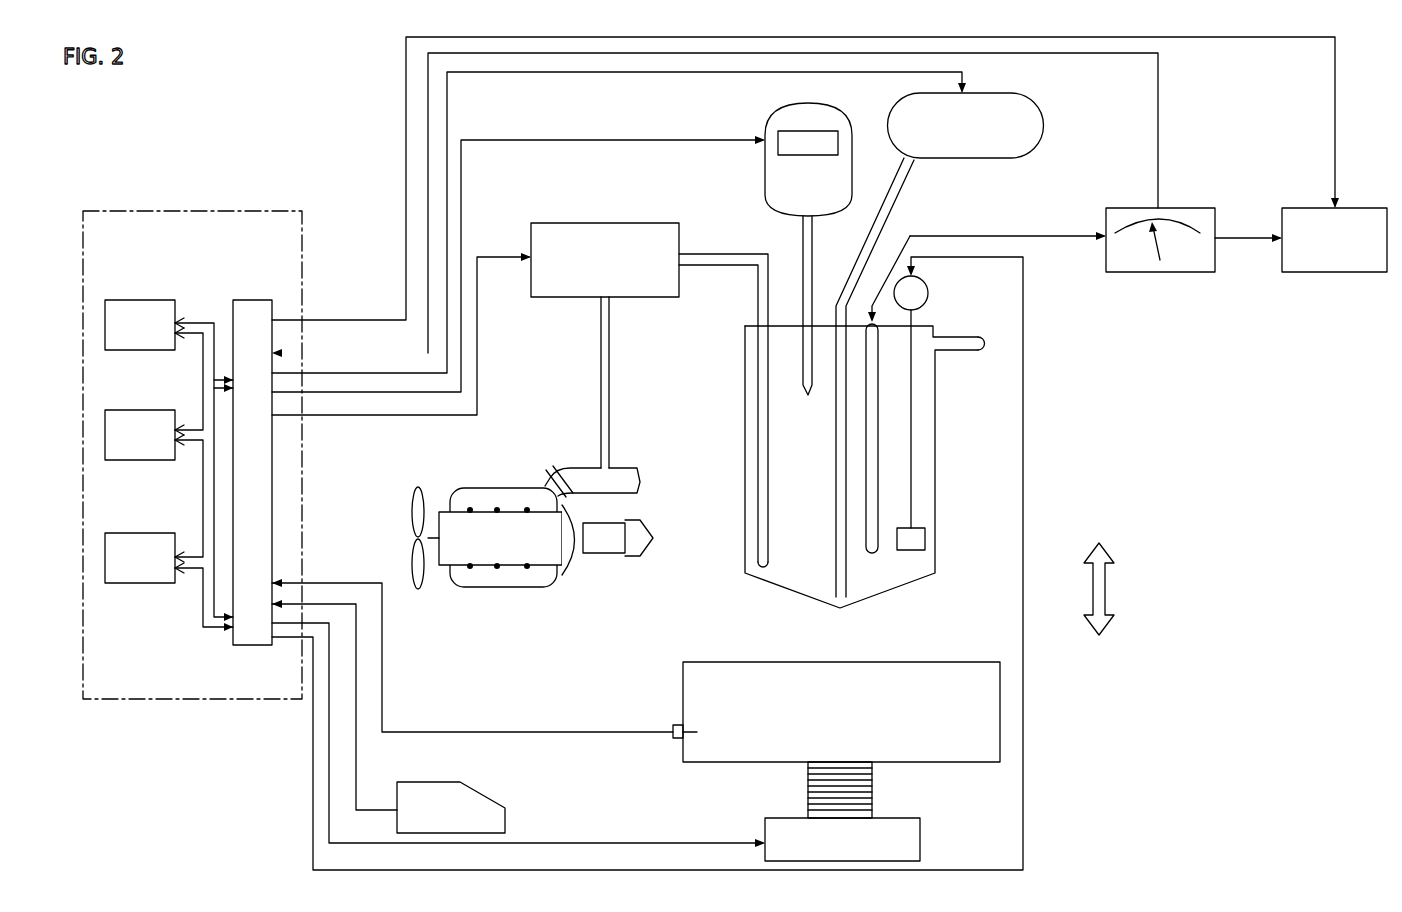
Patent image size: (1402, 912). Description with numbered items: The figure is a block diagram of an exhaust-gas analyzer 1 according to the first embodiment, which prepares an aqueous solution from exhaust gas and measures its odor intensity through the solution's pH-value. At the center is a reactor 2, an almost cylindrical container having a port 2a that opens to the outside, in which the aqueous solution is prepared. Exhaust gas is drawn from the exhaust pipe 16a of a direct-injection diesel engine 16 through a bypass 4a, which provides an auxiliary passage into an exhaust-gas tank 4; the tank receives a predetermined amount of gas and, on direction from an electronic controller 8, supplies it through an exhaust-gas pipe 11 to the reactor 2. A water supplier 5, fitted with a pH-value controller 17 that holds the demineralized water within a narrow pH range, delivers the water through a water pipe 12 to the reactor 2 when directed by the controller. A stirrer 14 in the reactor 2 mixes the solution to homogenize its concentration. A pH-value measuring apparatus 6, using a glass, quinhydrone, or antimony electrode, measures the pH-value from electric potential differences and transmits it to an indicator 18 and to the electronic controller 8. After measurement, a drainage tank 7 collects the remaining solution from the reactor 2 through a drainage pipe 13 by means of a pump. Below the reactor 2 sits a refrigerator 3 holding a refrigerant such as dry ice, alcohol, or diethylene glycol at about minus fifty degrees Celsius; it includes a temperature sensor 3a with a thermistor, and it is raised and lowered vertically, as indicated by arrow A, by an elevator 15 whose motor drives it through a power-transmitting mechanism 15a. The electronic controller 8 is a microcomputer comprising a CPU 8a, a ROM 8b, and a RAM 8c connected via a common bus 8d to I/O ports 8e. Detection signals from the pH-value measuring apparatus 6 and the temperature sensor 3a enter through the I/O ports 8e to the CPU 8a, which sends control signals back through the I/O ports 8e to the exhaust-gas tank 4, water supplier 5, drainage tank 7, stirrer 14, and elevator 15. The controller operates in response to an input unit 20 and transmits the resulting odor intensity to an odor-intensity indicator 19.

The exhaust-gas analyzer 1 is at (270, 128).
The reactor 2 is at (936, 468).
The port 2a is at (978, 350).
The refrigerator 3 is at (680, 754).
The temperature sensor 3a is at (672, 726).
The exhaust-gas tank 4 is at (640, 297).
The bypass 4a is at (601, 406).
The water supplier 5 is at (765, 176).
The pH-value measuring apparatus 6 is at (872, 553).
The drainage tank 7 is at (1036, 116).
The electronic controller 8 is at (203, 700).
The CPU 8a is at (148, 300).
The ROM 8b is at (148, 410).
The RAM 8c is at (148, 533).
The common bus 8d is at (200, 622).
The I/O ports 8e is at (258, 645).
The exhaust-gas pipe 11 is at (758, 298).
The water pipe 12 is at (803, 246).
The drainage pipe 13 is at (868, 256).
The stirrer 14 is at (929, 294).
The elevator 15 is at (920, 838).
The power-transmitting mechanism 15a is at (872, 790).
The direct-injection diesel engine 16 is at (510, 587).
The exhaust pipe 16a is at (624, 468).
The pH-value controller 17 is at (778, 131).
The indicator 18 is at (1154, 272).
The odor-intensity indicator 19 is at (1334, 272).
The input unit 20 is at (490, 784).
The arrow A is at (1106, 590).